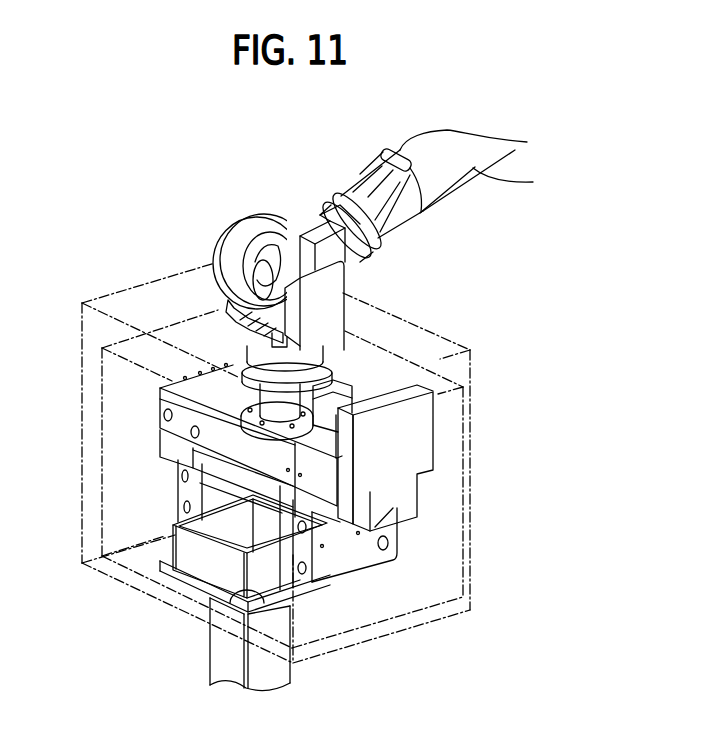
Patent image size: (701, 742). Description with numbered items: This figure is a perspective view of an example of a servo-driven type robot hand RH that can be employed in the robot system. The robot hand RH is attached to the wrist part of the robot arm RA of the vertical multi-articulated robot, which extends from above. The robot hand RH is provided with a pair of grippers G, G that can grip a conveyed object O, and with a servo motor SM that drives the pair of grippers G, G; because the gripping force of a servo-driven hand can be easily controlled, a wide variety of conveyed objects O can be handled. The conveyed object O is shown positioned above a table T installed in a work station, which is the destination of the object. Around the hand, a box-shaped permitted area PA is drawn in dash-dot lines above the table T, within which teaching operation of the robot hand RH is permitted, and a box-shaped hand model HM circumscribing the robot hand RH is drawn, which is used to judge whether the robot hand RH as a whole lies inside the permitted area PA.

The robot arm RA is at (471, 170).
The robot hand RH is at (183, 418).
The servo motor SM is at (361, 395).
The permitted area PA is at (474, 424).
The hand model HM is at (465, 497).
The gripper G is at (190, 497).
The conveyed object O is at (210, 566).
The table T is at (260, 590).